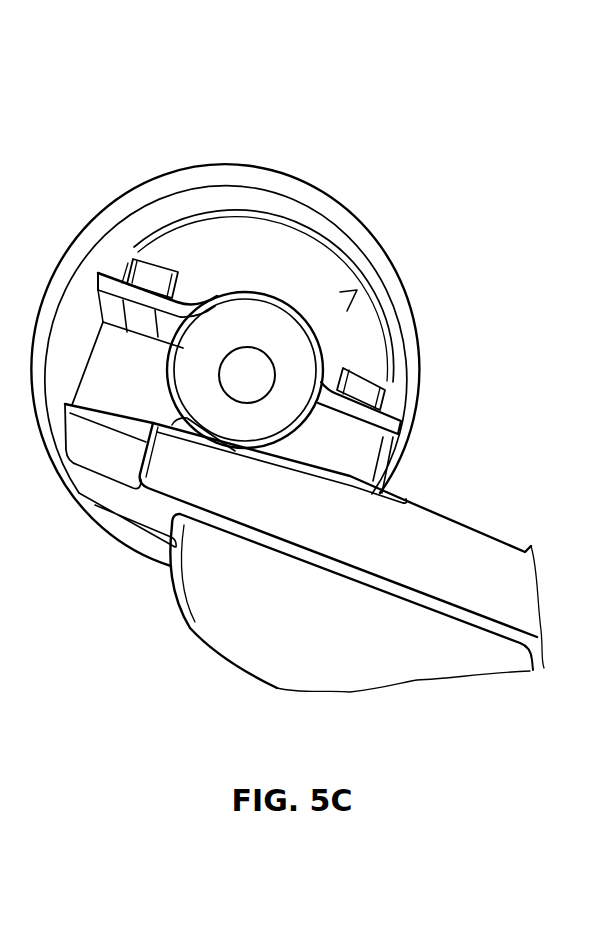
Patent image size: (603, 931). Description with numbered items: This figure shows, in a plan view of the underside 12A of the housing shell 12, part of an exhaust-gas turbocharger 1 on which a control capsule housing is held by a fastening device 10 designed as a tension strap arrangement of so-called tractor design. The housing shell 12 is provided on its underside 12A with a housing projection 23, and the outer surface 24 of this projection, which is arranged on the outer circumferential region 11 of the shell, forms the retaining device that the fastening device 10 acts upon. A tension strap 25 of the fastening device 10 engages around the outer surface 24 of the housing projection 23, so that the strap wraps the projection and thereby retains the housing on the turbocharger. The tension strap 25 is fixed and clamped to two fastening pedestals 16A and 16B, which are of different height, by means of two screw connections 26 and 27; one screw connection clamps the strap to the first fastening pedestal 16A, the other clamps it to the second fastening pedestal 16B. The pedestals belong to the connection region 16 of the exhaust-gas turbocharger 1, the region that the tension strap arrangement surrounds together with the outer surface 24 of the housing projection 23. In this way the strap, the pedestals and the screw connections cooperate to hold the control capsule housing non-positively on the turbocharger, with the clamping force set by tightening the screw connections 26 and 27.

The exhaust-gas turbocharger 1 is at (485, 530).
The fastening device 10 is at (213, 292).
The outer circumferential region 11 is at (172, 333).
The housing shell 12 is at (372, 213).
The underside 12A is at (358, 293).
The connection region 16 is at (353, 467).
The fastening pedestal 16A is at (363, 443).
The fastening pedestal 16B is at (107, 367).
The housing projection 23 is at (295, 350).
The outer surface 24 is at (270, 306).
The tension strap 25 is at (250, 296).
The screw connection 26 is at (362, 383).
The screw connection 27 is at (156, 278).